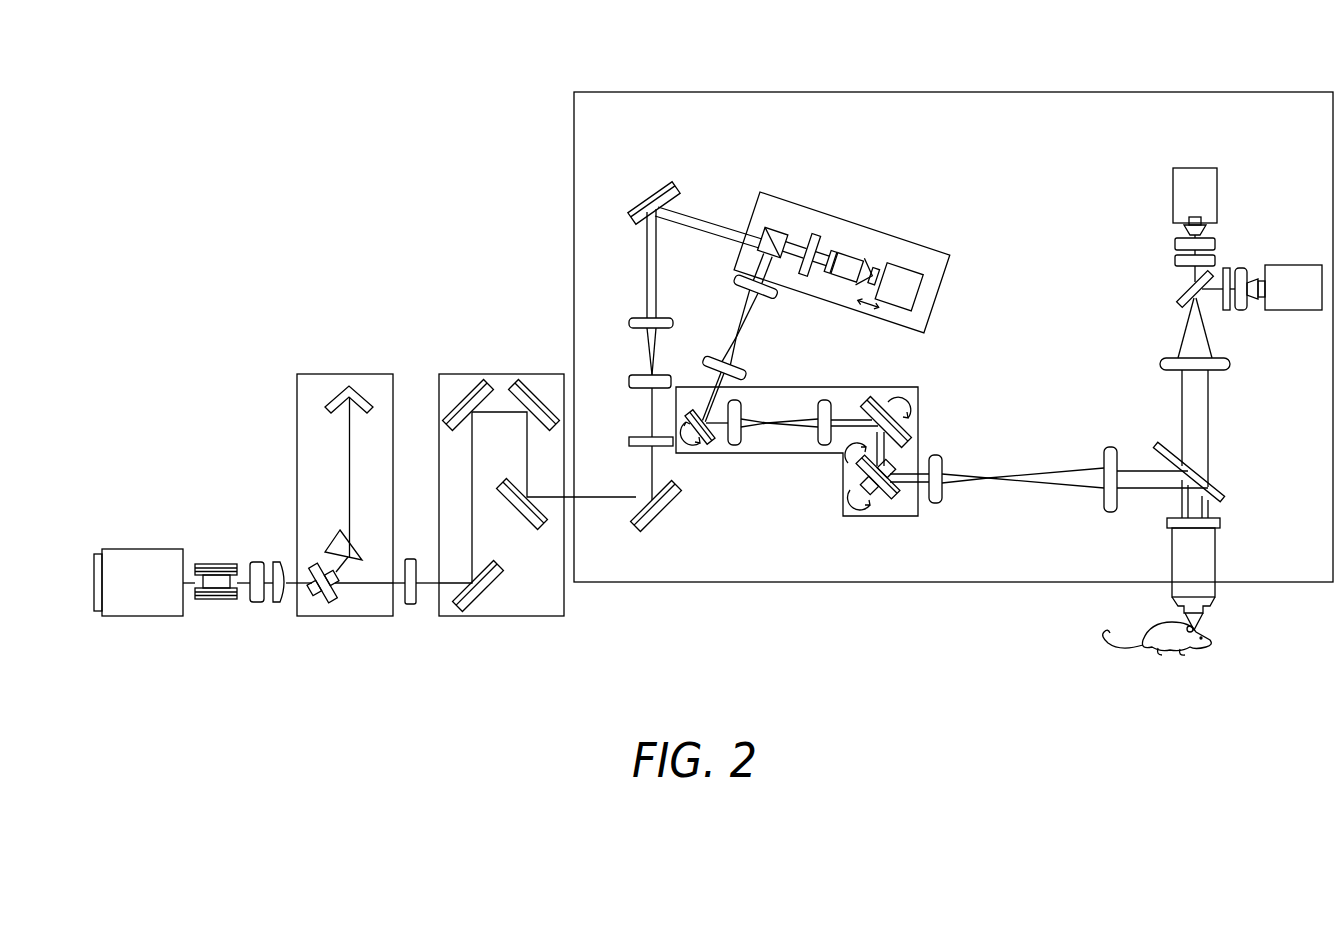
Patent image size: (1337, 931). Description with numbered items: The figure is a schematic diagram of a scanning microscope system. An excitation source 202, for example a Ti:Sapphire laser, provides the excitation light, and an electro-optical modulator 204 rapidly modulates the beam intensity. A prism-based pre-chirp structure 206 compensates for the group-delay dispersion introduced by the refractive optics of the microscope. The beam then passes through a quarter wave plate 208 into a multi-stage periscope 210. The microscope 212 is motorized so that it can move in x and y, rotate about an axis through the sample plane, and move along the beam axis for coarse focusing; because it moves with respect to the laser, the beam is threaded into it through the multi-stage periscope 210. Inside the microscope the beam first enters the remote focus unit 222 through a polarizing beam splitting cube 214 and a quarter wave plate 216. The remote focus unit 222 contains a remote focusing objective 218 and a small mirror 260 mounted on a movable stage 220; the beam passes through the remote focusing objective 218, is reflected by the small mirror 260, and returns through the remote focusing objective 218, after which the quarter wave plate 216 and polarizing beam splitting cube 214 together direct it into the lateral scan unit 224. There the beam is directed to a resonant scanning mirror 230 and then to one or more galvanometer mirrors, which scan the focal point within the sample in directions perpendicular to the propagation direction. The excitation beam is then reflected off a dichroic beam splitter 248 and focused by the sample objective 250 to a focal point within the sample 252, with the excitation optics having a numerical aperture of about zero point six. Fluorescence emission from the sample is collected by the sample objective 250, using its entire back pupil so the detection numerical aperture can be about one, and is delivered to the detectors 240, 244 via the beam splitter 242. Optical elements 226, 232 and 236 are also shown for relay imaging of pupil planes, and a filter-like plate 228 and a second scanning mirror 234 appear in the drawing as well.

The excitation source 202 is at (117, 617).
The electro-optical modulator 204 is at (215, 600).
The prism-based pre-chirp structure 206 is at (320, 617).
The quarter wave plate 208 is at (409, 605).
The multi-stage periscope 210 is at (521, 617).
The microscope 212 is at (662, 92).
The polarizing beam splitting cube 214 is at (780, 230).
The quarter wave plate 216 is at (818, 243).
The remote focusing objective 218 is at (848, 256).
The movable stage 220 is at (905, 267).
The remote focus unit 222 is at (947, 253).
The lateral scan unit 224 is at (830, 387).
The optical element 226 is at (740, 337).
The filter plate 228 is at (628, 442).
The resonant scanning mirror 230 is at (708, 443).
The optical element 232 is at (768, 425).
The second galvanometer mirror 234 is at (873, 517).
The optical element 236 is at (988, 480).
The detector 240 is at (1217, 207).
The beam splitter 242 is at (1188, 288).
The detector 244 is at (1288, 310).
The dichroic beam splitter 248 is at (1218, 484).
The sample objective 250 is at (1217, 553).
The sample 252 is at (1183, 653).
The small mirror 260 is at (876, 268).